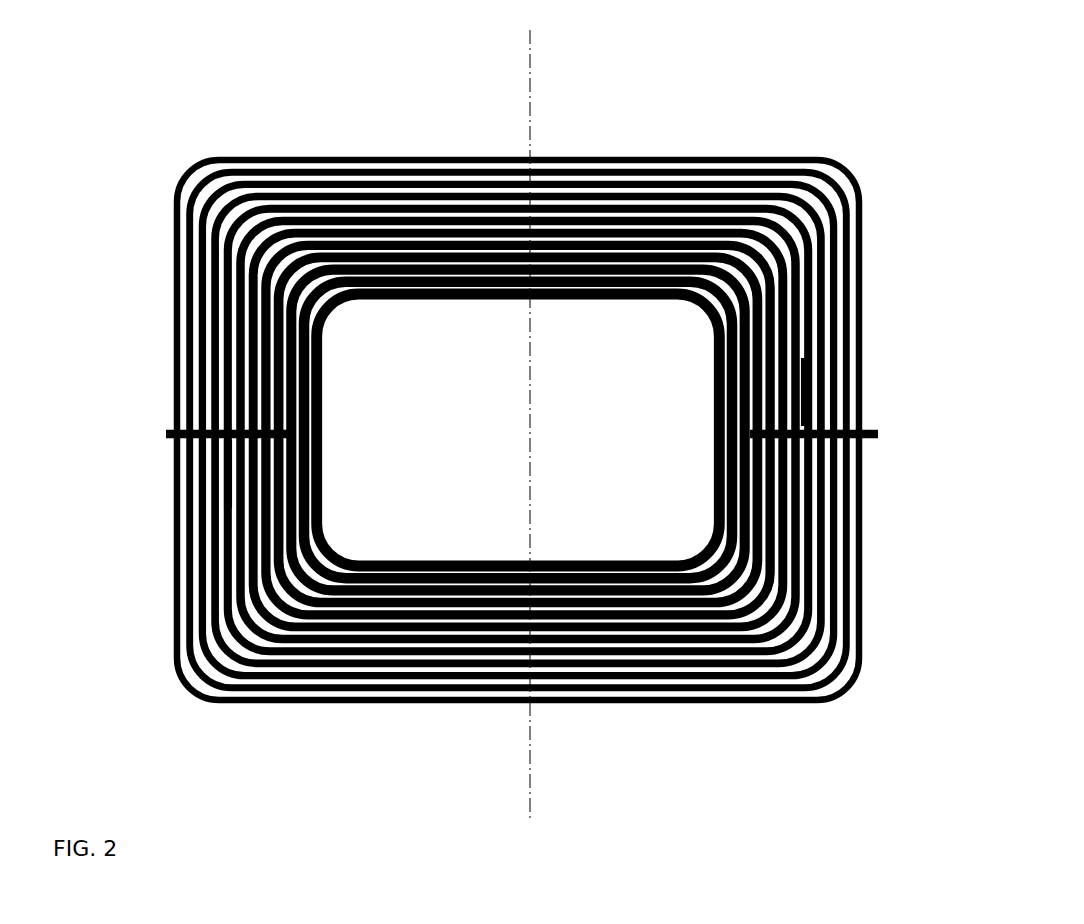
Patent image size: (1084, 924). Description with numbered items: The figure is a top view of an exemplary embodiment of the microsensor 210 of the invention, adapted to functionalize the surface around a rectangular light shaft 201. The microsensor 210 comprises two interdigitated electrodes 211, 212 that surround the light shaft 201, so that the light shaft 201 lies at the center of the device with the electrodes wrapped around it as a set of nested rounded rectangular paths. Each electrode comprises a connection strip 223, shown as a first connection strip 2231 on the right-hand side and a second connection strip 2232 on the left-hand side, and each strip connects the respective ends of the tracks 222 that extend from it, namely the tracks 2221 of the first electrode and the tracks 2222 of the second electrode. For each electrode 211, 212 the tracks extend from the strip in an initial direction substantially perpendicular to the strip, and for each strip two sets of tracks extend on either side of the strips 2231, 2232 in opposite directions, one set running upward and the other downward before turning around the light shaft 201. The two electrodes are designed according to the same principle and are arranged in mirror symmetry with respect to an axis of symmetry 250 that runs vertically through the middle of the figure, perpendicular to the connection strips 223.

The light shaft 201 is at (534, 434).
The microsensor 210 is at (511, 379).
The first interdigitated electrode 211 is at (790, 402).
The second interdigitated electrode 212 is at (212, 458).
The tracks 222 is at (502, 430).
The tracks of the first electrode 2221 is at (745, 447).
The tracks of the second electrode 2222 is at (265, 312).
The connection strips 223 is at (518, 385).
The first connection strip 2231 is at (870, 420).
The second connection strip 2232 is at (158, 423).
The axis of symmetry 250 is at (520, 92).